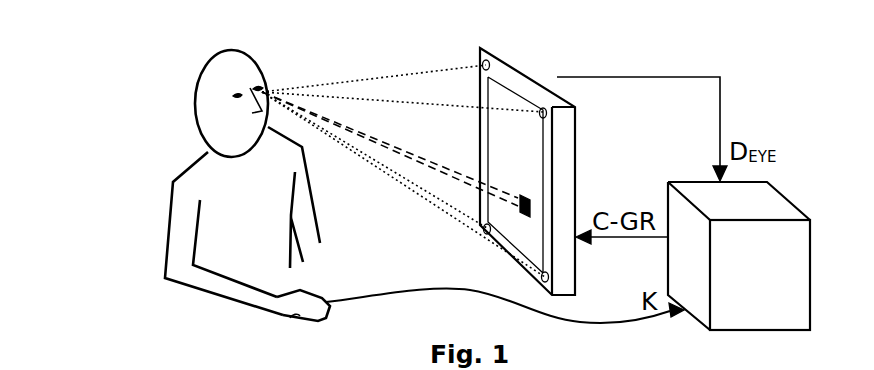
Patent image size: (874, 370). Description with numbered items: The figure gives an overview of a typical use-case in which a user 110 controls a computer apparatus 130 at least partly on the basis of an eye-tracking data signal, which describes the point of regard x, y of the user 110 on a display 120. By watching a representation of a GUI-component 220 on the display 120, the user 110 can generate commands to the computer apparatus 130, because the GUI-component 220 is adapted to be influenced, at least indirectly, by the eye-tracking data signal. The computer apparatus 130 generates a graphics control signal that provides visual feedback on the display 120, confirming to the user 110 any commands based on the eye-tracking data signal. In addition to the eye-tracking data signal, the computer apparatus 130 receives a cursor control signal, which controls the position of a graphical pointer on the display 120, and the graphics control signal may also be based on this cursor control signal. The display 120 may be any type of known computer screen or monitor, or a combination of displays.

The user 110 is at (203, 70).
The display 120 is at (492, 47).
The GUI-component 220 is at (532, 205).
The computer apparatus 130 is at (782, 192).